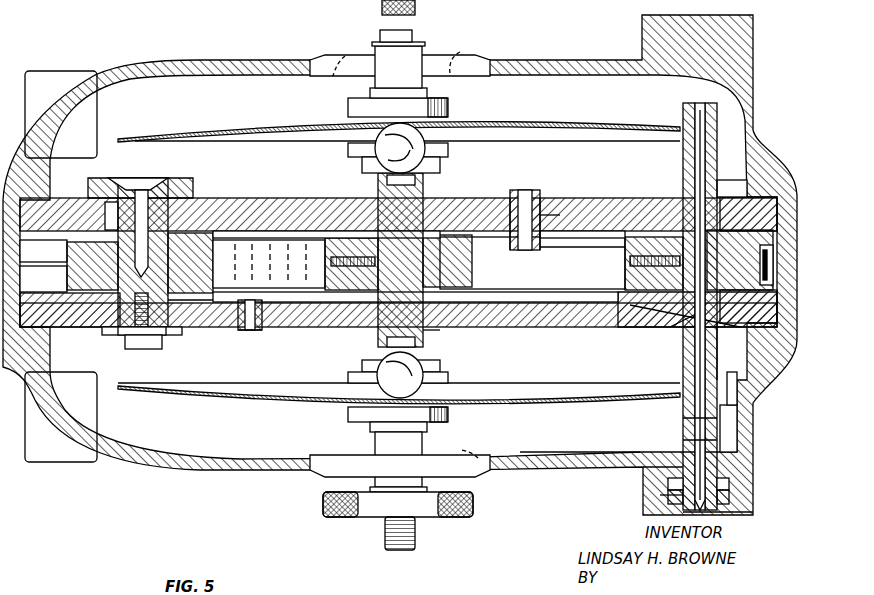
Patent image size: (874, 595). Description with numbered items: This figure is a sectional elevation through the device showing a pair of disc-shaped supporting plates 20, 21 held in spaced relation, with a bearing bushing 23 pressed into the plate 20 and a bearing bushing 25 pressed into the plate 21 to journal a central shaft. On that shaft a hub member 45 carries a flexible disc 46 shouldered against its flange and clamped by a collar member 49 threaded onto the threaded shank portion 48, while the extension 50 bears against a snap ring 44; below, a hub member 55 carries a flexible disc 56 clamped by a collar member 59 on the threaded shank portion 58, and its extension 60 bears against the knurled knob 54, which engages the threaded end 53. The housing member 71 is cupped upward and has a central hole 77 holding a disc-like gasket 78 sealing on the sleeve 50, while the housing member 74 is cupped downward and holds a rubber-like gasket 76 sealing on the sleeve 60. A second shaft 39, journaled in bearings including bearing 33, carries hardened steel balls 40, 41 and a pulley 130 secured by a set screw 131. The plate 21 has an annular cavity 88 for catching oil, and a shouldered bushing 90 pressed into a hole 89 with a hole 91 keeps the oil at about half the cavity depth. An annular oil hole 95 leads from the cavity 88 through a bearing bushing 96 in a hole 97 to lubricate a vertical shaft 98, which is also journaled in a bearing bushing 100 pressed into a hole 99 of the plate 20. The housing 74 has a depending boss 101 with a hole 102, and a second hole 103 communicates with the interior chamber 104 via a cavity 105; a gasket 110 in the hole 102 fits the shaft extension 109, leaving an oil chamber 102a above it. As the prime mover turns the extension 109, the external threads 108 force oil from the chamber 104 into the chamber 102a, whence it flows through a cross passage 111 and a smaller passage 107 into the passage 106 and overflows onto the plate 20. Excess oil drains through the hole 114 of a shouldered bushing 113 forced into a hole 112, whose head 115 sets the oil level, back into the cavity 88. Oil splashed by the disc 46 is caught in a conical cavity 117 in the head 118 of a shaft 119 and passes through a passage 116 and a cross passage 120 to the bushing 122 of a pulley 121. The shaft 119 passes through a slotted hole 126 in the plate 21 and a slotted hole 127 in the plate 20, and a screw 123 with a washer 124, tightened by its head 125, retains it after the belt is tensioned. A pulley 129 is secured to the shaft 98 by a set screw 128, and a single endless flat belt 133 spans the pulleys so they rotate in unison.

The supporting plate 20 is at (246, 200).
The supporting plate 21 is at (283, 327).
The bearing bushing 23 is at (378, 192).
The bearing bushing 25 is at (442, 337).
The bearing 33 is at (415, 5).
The second shaft 39 is at (423, 185).
The hardened steel ball 40 is at (378, 362).
The hardened steel ball 41 is at (430, 152).
The snap ring 44 is at (422, 44).
The hub member 45 is at (350, 160).
The flexible disc 46 is at (515, 124).
The threaded shank portion 48 is at (427, 92).
The collar member 49 is at (447, 106).
The extension 50 is at (378, 42).
The threaded end 53 is at (415, 530).
The knurled knob 54 is at (473, 503).
The hub member 55 is at (440, 368).
The flexible disc 56 is at (535, 385).
The threaded shank portion 58 is at (427, 426).
The collar member 59 is at (447, 410).
The extension 60 is at (375, 440).
The housing member 71 is at (556, 57).
The housing member 74 is at (228, 470).
The rubber-like gasket 76 is at (475, 444).
The central hole 77 is at (454, 56).
The disc-like gasket 78 is at (343, 56).
The annular cavity 88 is at (524, 320).
The hole 89 is at (262, 318).
The shouldered bushing 90 is at (236, 332).
The hole 91 is at (250, 332).
The annular oil hole 95 is at (620, 327).
The bearing bushing 96 is at (677, 327).
The hole 97 is at (725, 318).
The vertical shaft 98 is at (714, 360).
The hole 99 is at (666, 198).
The bearing bushing 100 is at (720, 197).
The depending boss 101 is at (650, 470).
The hole 102 is at (729, 496).
The oil chamber 102a is at (729, 484).
The second hole 103 is at (737, 450).
The interior chamber 104 is at (580, 439).
The cavity 105 is at (745, 418).
The passage 106 is at (692, 112).
The smaller passage 107 is at (683, 418).
The external threads 108 is at (683, 440).
The shaft extension 109 is at (690, 510).
The gasket 110 is at (717, 512).
The cross passage 111 is at (660, 495).
The hole 112 is at (542, 200).
The shouldered bushing 113 is at (564, 217).
The hole 114 is at (528, 190).
The head 115 is at (512, 198).
The passage 116 is at (141, 178).
The conical cavity 117 is at (162, 178).
The head 118 is at (196, 188).
The shaft 119 is at (69, 204).
The cross passage 120 is at (175, 262).
The pulley 121 is at (86, 322).
The bushing 122 is at (58, 253).
The screw 123 is at (165, 318).
The washer 124 is at (118, 338).
The head 125 is at (142, 349).
The slotted hole 126 is at (95, 333).
The slotted hole 127 is at (112, 178).
The set screw 128 is at (620, 264).
The pulley 129 is at (643, 230).
The pulley 130 is at (472, 265).
The set screw 131 is at (306, 264).
The endless flat belt 133 is at (68, 282).